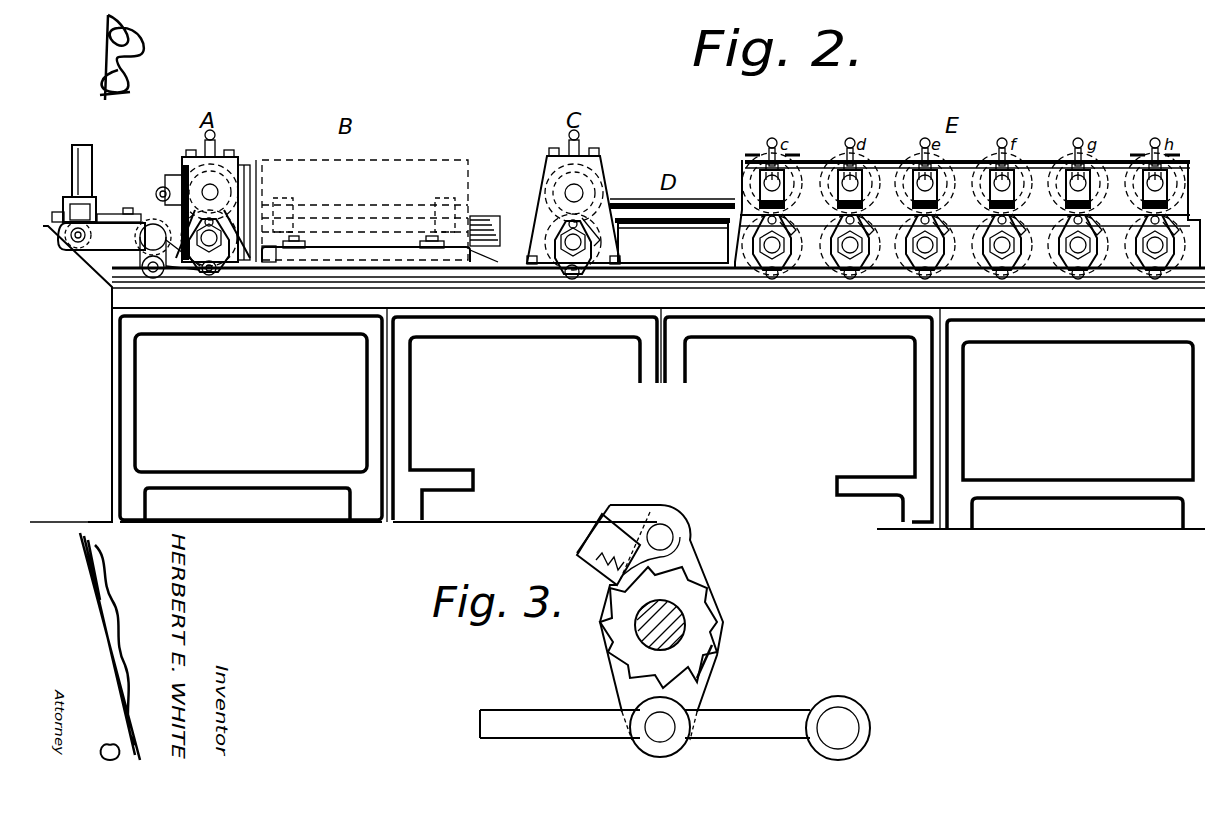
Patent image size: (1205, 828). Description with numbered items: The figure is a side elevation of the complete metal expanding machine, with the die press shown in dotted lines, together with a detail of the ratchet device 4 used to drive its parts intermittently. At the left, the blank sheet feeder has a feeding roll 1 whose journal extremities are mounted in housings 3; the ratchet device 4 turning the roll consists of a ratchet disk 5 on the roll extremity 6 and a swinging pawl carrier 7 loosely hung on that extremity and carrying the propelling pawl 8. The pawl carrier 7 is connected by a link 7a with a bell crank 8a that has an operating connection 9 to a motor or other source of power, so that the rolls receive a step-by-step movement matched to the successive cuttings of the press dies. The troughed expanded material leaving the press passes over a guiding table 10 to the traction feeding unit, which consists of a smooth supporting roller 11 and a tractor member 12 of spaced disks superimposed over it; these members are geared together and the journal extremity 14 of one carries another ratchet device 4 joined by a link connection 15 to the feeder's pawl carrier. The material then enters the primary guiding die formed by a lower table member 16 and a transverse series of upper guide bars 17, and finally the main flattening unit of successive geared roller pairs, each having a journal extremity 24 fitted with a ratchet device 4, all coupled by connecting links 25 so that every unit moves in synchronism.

In FIG. 2, the feeding roll 1 is at (222, 178).
In FIG. 2, the housing 3 is at (250, 244).
In FIG. 2, the ratchet device 4 is at (228, 240).
In FIG. 3, the ratchet device 4 is at (668, 622).
In FIG. 3, the ratchet disk 5 is at (658, 627).
In FIG. 3, the roll extremity 6 is at (665, 626).
In FIG. 3, the swinging pawl carrier 7 is at (693, 690).
In FIG. 2, the link 7a is at (200, 272).
In FIG. 3, the link 7a is at (745, 726).
In FIG. 3, the propelling pawl 8 is at (632, 548).
In FIG. 2, the bell crank 8a is at (111, 243).
In FIG. 2, the operating connection 9 is at (92, 172).
In FIG. 2, the guiding table 10 is at (496, 239).
In FIG. 2, the supporting member 11 is at (598, 268).
In FIG. 2, the tractor member 12 is at (548, 178).
In FIG. 2, the journal extremity 14 is at (673, 243).
In FIG. 2, the link connection 15 is at (412, 264).
In FIG. 3, the link connection 15 is at (531, 722).
In FIG. 2, the lower table member 16 is at (691, 224).
In FIG. 2, the upper guide bars 17 is at (693, 210).
In FIG. 2, the journal extremity 24 is at (775, 270).
In FIG. 2, the connecting links 25 is at (668, 270).